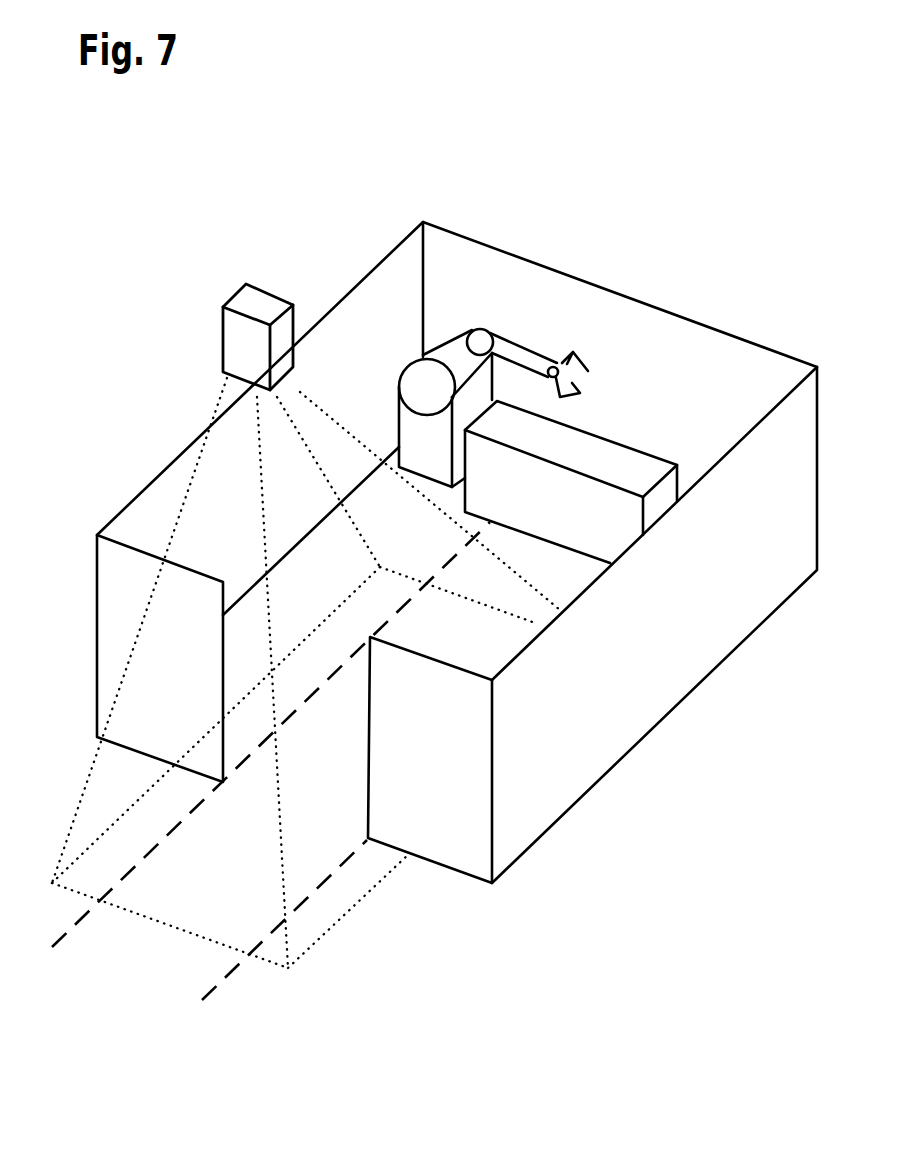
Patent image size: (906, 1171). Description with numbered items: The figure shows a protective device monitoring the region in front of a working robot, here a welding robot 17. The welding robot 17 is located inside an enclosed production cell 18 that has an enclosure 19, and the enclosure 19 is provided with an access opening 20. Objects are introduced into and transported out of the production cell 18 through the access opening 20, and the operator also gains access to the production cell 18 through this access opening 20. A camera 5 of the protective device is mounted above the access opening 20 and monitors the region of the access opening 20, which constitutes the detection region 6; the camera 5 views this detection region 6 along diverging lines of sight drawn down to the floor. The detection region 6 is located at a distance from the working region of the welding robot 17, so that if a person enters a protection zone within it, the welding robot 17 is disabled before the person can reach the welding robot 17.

The camera 5 is at (260, 300).
The detection region 6 is at (218, 398).
The welding robot 17 is at (505, 347).
The production cell 18 is at (698, 731).
The enclosure 19 is at (108, 643).
The access opening 20 is at (324, 777).